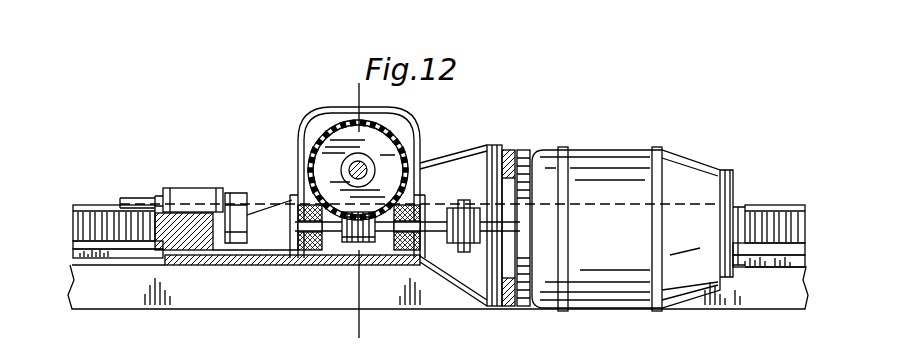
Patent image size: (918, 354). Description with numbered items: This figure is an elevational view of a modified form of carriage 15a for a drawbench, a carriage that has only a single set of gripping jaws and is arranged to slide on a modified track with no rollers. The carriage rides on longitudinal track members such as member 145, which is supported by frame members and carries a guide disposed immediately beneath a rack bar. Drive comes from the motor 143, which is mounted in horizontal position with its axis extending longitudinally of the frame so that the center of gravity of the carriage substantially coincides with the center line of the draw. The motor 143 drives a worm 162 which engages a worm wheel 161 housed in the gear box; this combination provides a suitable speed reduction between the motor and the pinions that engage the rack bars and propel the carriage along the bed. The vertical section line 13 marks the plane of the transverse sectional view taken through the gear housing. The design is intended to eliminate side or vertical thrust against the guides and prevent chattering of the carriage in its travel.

The section line 13- 13 is at (350, 325).
The modified form of carriage 15a is at (425, 140).
The motor 143 is at (617, 155).
The longitudinal member 145 is at (246, 285).
The worm wheel 161 is at (385, 140).
The worm 162 is at (352, 247).